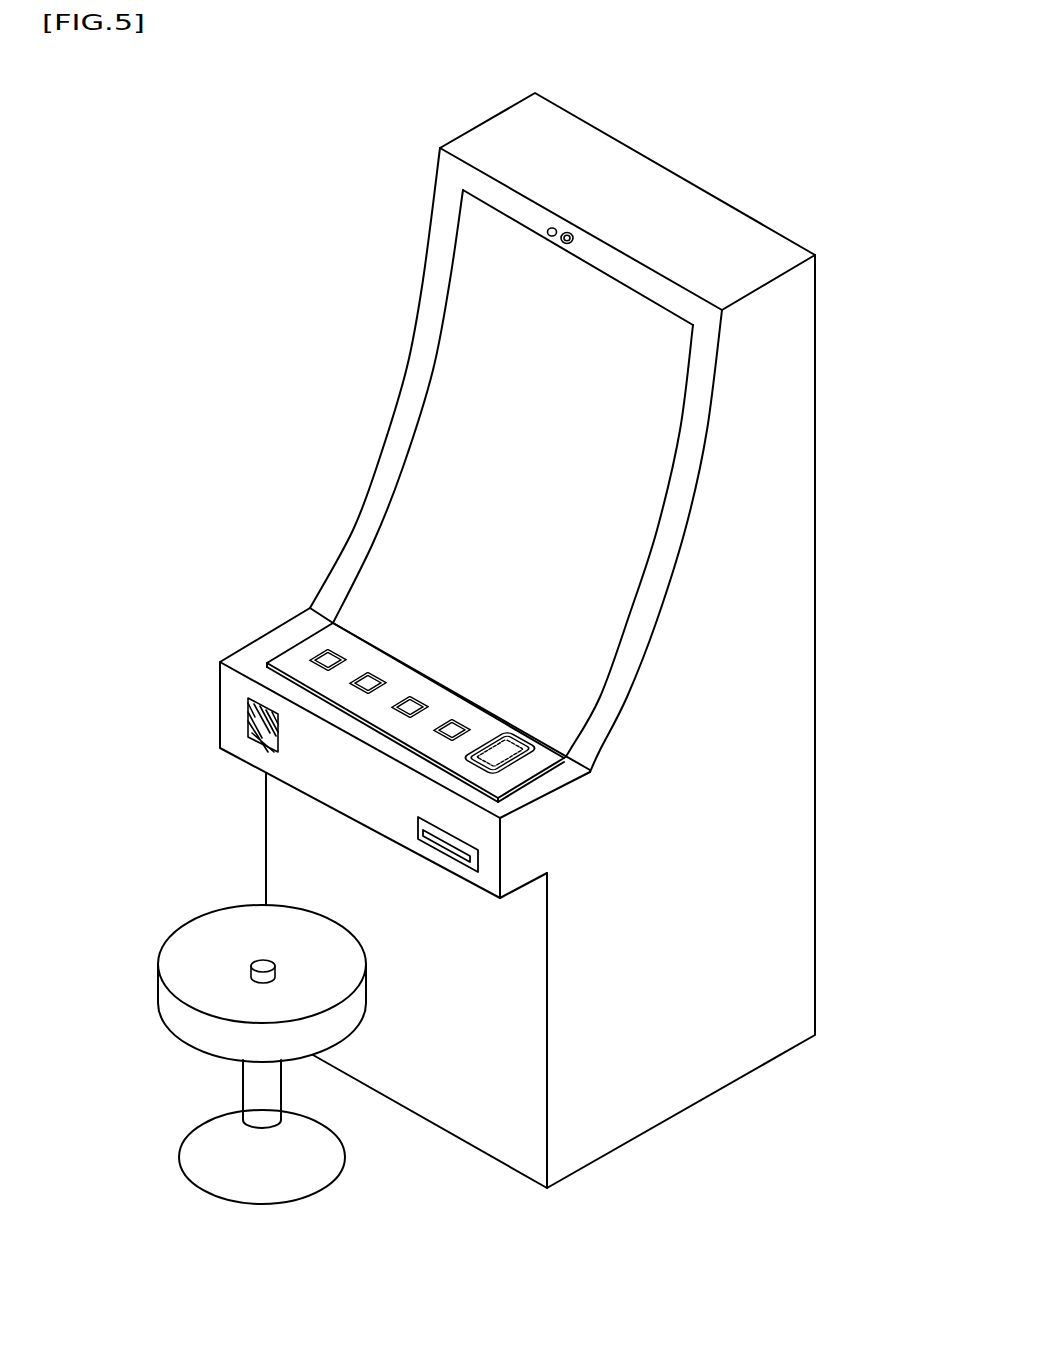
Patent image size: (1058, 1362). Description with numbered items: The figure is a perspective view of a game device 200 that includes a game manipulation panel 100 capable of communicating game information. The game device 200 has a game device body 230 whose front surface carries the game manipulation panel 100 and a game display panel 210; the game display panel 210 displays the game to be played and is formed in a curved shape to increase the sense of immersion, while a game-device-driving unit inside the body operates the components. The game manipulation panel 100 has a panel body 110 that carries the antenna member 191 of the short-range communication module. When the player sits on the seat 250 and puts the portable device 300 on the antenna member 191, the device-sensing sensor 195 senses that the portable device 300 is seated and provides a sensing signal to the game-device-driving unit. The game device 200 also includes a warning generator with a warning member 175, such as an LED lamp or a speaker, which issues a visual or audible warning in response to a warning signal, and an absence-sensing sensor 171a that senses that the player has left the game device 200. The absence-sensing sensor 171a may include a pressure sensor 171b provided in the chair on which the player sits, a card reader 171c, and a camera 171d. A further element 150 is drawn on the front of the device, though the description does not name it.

The game manipulation panel 100 is at (361, 622).
The panel body 110 is at (307, 648).
The terminal connection unit 150 is at (523, 762).
The absence-sensing sensor 171a is at (547, 230).
The pressure sensor 171b is at (258, 962).
The card reader 171c is at (462, 853).
The camera 171d is at (566, 232).
The warning member 175 is at (248, 737).
The antenna member 191 is at (490, 747).
The device-sensing sensor 195 is at (523, 760).
The game device 200 is at (328, 166).
The game display panel 210 is at (460, 385).
The game device body 230 is at (433, 215).
The seat 250 is at (178, 1020).
The portable device 300 is at (517, 740).